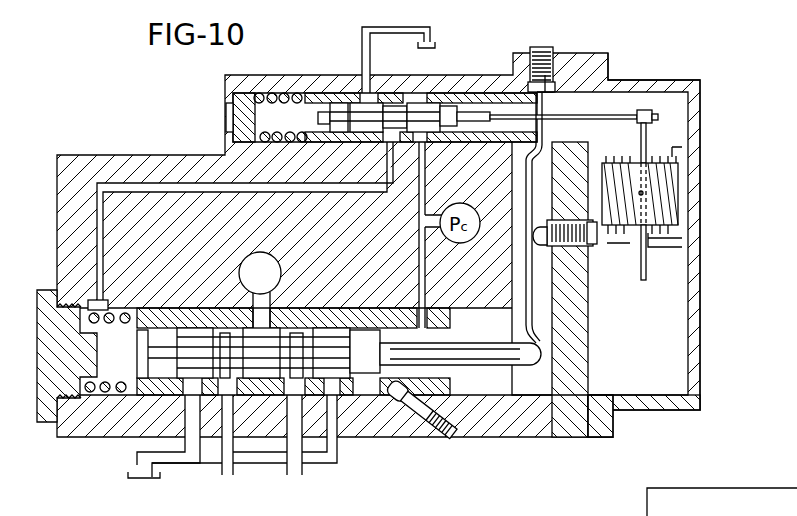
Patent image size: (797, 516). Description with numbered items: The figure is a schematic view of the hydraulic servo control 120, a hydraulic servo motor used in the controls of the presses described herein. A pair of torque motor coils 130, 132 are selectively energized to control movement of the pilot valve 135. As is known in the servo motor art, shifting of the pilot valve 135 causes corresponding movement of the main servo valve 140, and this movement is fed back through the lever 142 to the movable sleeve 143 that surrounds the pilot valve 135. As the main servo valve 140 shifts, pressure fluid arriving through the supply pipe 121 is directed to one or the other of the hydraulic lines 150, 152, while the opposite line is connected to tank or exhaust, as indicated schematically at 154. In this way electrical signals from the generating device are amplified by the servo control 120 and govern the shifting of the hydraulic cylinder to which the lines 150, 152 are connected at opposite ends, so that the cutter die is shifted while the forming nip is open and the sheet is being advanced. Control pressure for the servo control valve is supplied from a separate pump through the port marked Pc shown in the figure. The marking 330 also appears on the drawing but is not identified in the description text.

The hydraulic servo control 120 is at (652, 72).
The supply pipe 121 is at (273, 285).
The torque motor coil 130 is at (618, 237).
The torque motor coil 132 is at (662, 242).
The pilot valve 135 is at (393, 110).
The main servo valve 140 is at (368, 372).
The lever 142 is at (528, 318).
The movable sleeve 143 is at (327, 100).
The hydraulic line 150 is at (224, 472).
The hydraulic line 152 is at (292, 470).
The tank or exhaust 154 is at (172, 472).
The marker 330 is at (679, 502).